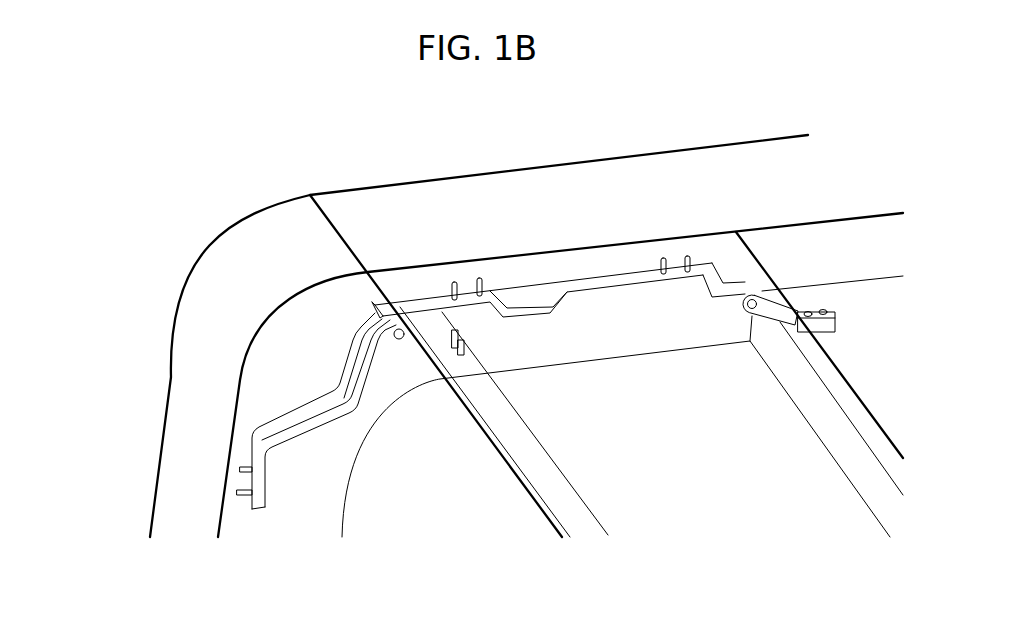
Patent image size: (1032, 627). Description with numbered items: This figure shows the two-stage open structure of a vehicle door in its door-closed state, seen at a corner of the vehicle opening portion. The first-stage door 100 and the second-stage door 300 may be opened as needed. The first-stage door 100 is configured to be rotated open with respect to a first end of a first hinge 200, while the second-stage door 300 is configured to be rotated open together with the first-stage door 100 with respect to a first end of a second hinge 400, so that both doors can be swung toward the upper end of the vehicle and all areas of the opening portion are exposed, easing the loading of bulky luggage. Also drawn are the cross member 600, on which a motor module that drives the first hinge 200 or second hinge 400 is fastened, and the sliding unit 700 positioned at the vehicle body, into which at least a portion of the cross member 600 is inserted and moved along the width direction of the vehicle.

The first-stage door 100 is at (180, 475).
The first hinge 200 is at (283, 424).
The second-stage door 300 is at (422, 217).
The second hinge 400 is at (703, 272).
The cross member 600 is at (533, 475).
The sliding unit 700 is at (522, 298).